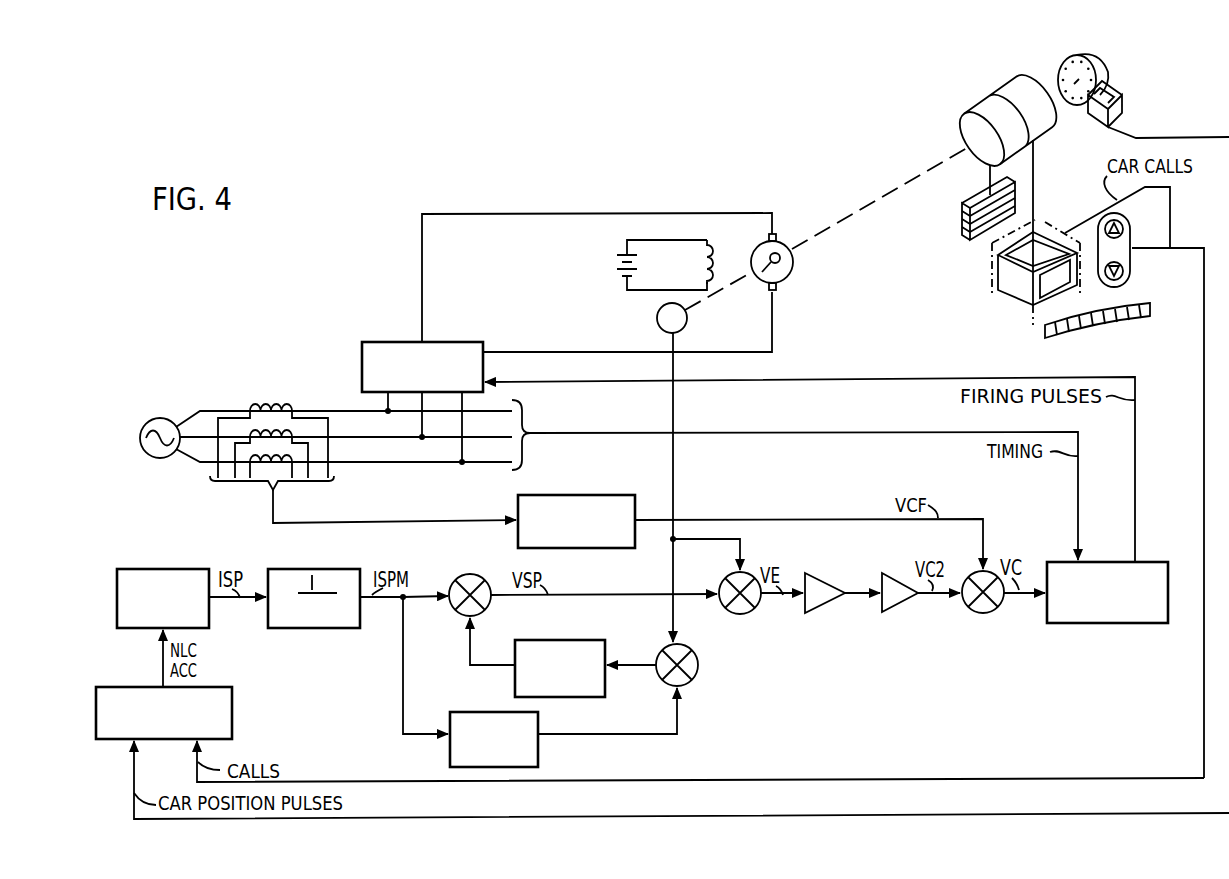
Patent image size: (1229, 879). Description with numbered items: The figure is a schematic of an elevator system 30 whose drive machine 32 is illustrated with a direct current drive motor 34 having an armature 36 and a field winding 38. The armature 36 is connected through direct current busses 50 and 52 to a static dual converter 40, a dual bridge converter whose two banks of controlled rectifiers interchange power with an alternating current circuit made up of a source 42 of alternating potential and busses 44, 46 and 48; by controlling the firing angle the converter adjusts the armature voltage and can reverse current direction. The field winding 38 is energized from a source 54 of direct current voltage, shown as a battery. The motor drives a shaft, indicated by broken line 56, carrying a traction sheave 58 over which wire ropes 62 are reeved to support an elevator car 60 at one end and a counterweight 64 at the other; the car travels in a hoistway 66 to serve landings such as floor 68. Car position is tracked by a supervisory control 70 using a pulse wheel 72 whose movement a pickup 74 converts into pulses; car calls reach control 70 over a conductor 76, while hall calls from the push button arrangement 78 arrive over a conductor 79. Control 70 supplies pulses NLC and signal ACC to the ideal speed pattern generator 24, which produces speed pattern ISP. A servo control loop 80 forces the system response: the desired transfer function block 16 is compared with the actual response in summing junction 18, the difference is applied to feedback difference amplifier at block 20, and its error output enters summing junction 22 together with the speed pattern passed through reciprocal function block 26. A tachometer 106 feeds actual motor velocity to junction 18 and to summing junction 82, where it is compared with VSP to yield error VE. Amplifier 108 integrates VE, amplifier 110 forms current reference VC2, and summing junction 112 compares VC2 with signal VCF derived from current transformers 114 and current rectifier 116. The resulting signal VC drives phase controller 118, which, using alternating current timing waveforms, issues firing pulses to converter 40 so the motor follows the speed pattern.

The desired system transfer function block 16 is at (487, 712).
The summing junction 18 is at (695, 661).
The feedback difference amplifier H3 20 is at (568, 641).
The summing junction 22 is at (463, 574).
The ideal speed pattern generator 24 is at (172, 569).
The reciprocal transfer function block 26 is at (322, 569).
The elevator system 30 is at (417, 328).
The drive machine 32 is at (702, 252).
The direct current drive motor 34 is at (660, 265).
The armature 36 is at (783, 247).
The field winding 38 is at (697, 262).
The dual converter 40 is at (383, 342).
The source of alternating potential 42 is at (153, 418).
The bus 44 is at (342, 413).
The bus 46 is at (344, 440).
The bus 48 is at (346, 465).
The direct current bus 50 is at (424, 281).
The direct current bus 52 is at (582, 352).
The source of direct current voltage 54 is at (620, 262).
The drive shaft 56 is at (912, 178).
The traction sheave 58 is at (985, 110).
The elevator car 60 is at (1020, 293).
The wire ropes 62 is at (1034, 170).
The counterweight 64 is at (968, 200).
The hoistway 66 is at (992, 250).
The floor 68 is at (1126, 297).
The supervisory control 70 is at (232, 705).
The pulse wheel 72 is at (1066, 104).
The pickup 74 is at (1122, 107).
The conductor 76 is at (1171, 197).
The hall call push button arrangement 78 is at (1130, 236).
The conductor 79 is at (1152, 249).
The servo control loop 80 is at (661, 581).
The summing junction 82 is at (741, 614).
The tachometer T1 106 is at (688, 318).
The amplifier 108 is at (819, 565).
The amplifier 110 is at (897, 566).
The summing junction 112 is at (964, 578).
The current transformers 114 is at (283, 394).
The current rectifier 116 is at (585, 495).
The phase controller 118 is at (1152, 562).